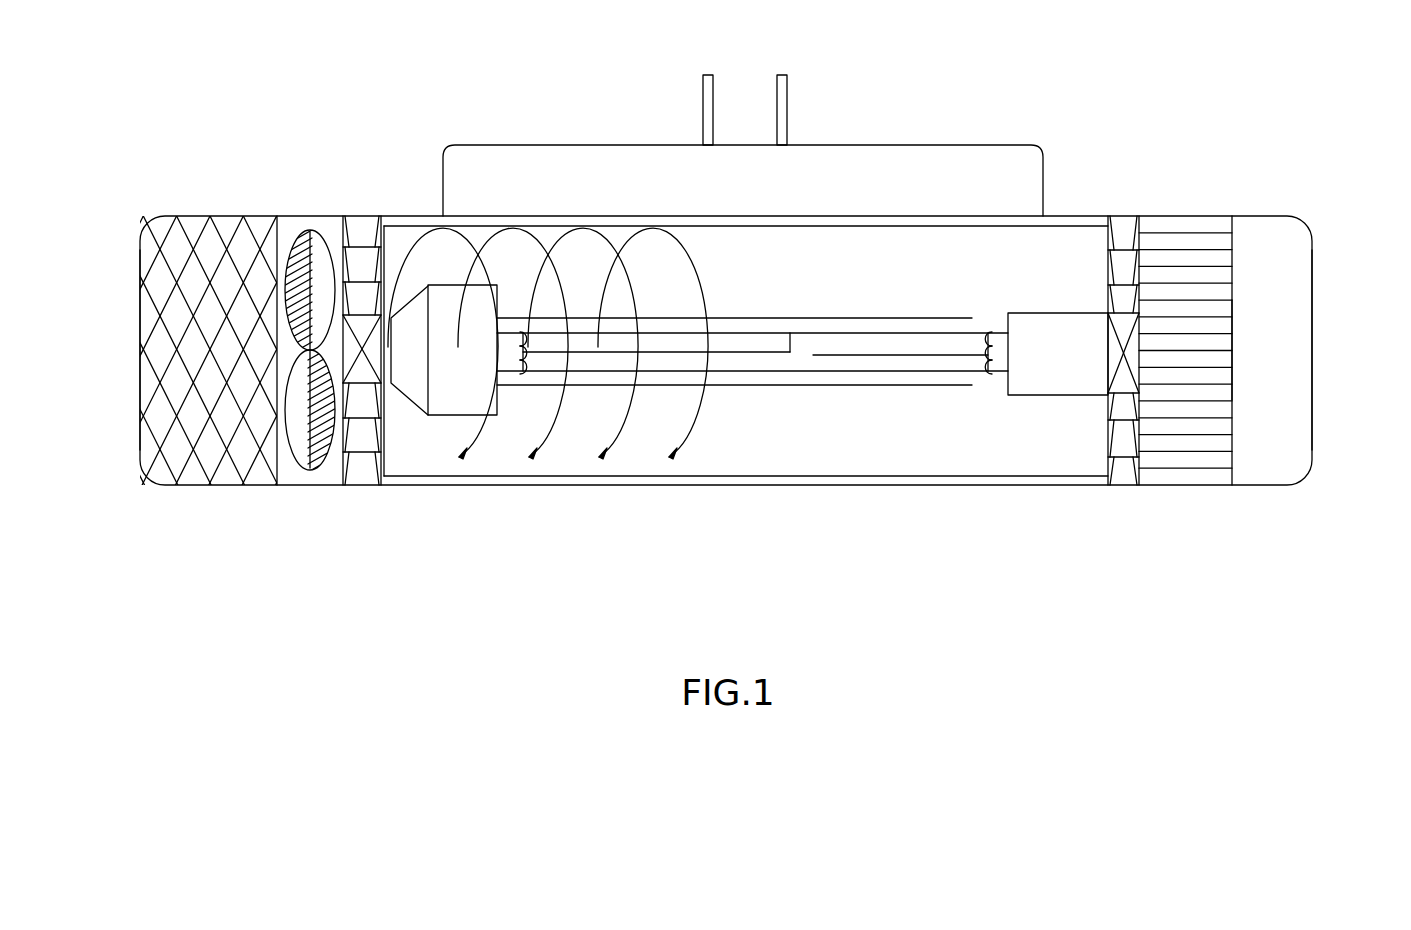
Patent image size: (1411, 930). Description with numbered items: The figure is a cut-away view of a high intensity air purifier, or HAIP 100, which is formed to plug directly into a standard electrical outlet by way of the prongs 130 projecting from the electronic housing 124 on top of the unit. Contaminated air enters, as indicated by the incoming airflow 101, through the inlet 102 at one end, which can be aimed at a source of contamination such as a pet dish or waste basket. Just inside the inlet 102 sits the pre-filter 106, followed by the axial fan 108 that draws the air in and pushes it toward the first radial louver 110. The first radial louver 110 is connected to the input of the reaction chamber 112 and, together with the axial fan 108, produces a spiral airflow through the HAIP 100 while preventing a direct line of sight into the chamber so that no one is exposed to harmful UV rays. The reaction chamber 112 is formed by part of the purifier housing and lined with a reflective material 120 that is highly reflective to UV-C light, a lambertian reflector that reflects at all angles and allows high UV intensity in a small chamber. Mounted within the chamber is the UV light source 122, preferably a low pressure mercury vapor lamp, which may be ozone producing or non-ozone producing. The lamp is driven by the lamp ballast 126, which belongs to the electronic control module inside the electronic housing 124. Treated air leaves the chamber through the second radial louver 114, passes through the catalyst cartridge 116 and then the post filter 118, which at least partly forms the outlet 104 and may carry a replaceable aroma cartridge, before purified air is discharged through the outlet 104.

The high intensity air purifier (HAIP) 100 is at (360, 615).
The air inlet 101 is at (126, 345).
The inlet 102 is at (728, 497).
The outlet 104 is at (1329, 358).
The pre-filter 106 is at (178, 452).
The axial fan 108 is at (316, 243).
The first radial louver 110 is at (360, 468).
The reaction chamber 112 is at (931, 280).
The second radial louver 114 is at (1125, 472).
The catalyst cartridge 116 is at (1183, 252).
The post filter 118 is at (1277, 460).
The reflective material 120 is at (980, 488).
The UV light source 122 is at (813, 355).
The electronic housing 124 is at (519, 183).
The lamp ballast 126 is at (446, 393).
The electrical pins 130 is at (744, 110).